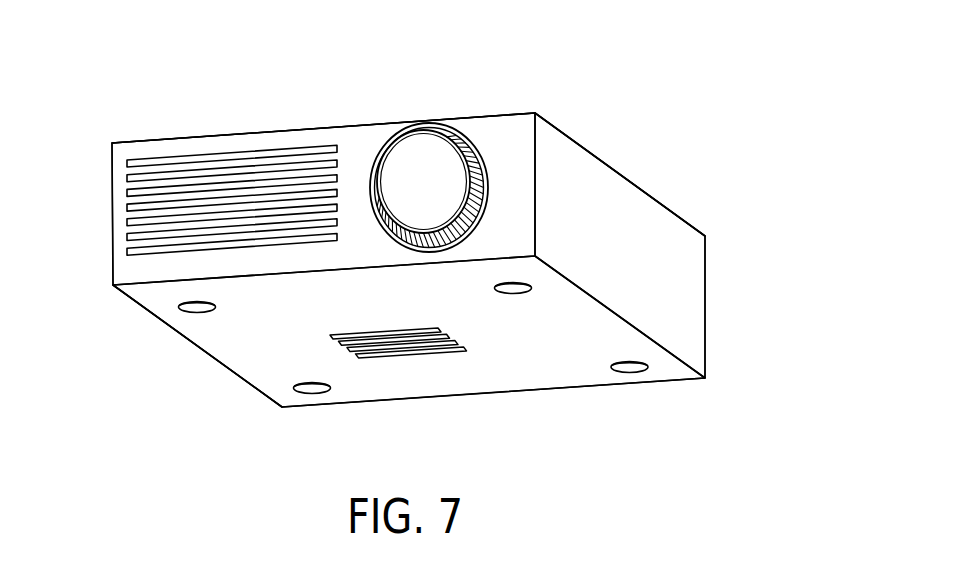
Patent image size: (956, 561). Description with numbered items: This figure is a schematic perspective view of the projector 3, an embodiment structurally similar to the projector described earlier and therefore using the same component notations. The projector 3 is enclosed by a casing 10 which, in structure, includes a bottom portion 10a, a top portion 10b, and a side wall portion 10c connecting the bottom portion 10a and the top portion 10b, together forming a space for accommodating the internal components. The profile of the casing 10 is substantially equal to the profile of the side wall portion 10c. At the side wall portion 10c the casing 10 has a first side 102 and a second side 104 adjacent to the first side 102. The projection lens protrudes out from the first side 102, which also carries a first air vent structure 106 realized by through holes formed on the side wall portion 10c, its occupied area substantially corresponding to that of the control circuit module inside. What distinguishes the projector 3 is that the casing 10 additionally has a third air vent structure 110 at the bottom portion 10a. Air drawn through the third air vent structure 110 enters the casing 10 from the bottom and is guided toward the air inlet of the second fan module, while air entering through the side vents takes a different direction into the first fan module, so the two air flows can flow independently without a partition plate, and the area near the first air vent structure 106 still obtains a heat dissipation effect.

The projector 3 is at (165, 70).
The casing 10 is at (479, 260).
The bottom portion 10a is at (595, 341).
The top portion 10b is at (637, 180).
The side wall portion 10c is at (672, 264).
The first side 102 is at (360, 142).
The second side 104 is at (168, 328).
The first air vent structure 106 is at (267, 167).
The third air vent structure 110 is at (393, 343).